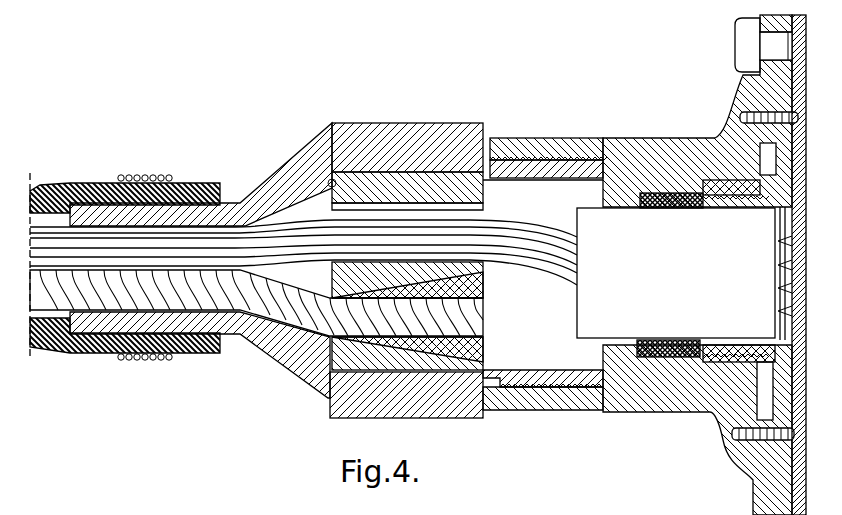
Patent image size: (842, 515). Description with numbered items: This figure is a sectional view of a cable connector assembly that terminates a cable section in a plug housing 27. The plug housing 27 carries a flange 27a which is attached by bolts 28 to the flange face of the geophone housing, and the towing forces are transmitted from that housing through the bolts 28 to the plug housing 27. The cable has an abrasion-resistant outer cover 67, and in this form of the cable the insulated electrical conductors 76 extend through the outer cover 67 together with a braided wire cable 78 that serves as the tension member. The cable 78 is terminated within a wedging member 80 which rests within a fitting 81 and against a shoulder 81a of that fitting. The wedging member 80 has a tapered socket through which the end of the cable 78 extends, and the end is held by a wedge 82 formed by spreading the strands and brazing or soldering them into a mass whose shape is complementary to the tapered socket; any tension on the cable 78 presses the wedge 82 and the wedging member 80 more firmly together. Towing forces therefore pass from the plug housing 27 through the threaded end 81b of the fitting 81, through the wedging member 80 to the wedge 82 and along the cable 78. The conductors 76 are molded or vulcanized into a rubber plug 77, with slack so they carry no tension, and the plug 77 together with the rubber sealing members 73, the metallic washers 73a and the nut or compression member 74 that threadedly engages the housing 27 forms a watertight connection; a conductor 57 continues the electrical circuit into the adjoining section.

The plug housing 27 is at (689, 146).
The flange 27a is at (768, 25).
The bolts 28 is at (748, 45).
The conductor 57 is at (778, 317).
The outer cover 67 is at (51, 192).
The sealing members 73 is at (690, 209).
The metallic washers 73a is at (697, 342).
The nut or compression member 74 is at (740, 338).
The insulated electrical conductors 76 is at (521, 258).
The plug 77 is at (632, 313).
The braided wire cable 78 is at (302, 318).
The wedging member 80 is at (348, 362).
The fitting 81 is at (430, 132).
The shoulder 81a is at (330, 182).
The threaded end 81b is at (524, 165).
The wedge 82 is at (483, 347).